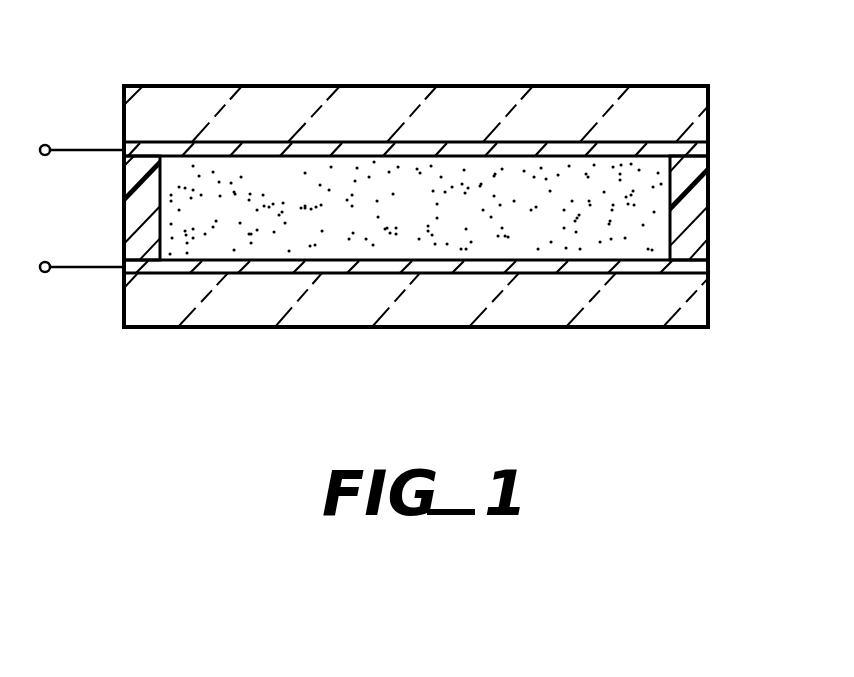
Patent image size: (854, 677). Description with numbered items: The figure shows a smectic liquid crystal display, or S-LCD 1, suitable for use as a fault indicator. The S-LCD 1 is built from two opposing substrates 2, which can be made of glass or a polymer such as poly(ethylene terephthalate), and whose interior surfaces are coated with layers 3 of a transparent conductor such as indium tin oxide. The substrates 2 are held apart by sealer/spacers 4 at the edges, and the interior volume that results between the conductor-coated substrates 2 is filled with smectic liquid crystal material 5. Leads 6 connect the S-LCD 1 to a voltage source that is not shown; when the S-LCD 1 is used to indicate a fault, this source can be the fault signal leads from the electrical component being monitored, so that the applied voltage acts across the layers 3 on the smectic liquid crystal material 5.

The S-LCD 1 is at (341, 335).
The substrates 2 is at (678, 107).
The layers of transparent conductor 3 is at (330, 143).
The sealer/spacers 4 is at (133, 210).
The smectic liquid crystal material 5 is at (475, 205).
The leads 6 is at (80, 147).